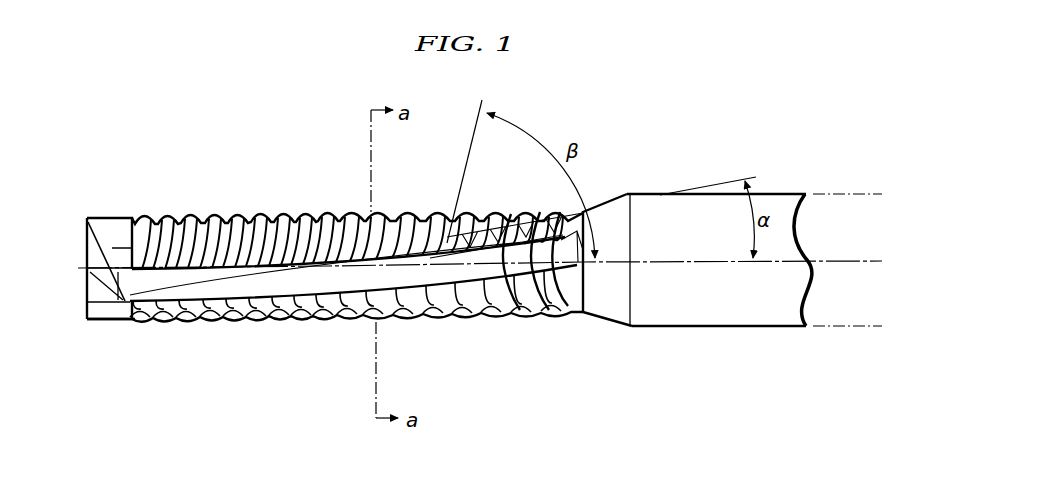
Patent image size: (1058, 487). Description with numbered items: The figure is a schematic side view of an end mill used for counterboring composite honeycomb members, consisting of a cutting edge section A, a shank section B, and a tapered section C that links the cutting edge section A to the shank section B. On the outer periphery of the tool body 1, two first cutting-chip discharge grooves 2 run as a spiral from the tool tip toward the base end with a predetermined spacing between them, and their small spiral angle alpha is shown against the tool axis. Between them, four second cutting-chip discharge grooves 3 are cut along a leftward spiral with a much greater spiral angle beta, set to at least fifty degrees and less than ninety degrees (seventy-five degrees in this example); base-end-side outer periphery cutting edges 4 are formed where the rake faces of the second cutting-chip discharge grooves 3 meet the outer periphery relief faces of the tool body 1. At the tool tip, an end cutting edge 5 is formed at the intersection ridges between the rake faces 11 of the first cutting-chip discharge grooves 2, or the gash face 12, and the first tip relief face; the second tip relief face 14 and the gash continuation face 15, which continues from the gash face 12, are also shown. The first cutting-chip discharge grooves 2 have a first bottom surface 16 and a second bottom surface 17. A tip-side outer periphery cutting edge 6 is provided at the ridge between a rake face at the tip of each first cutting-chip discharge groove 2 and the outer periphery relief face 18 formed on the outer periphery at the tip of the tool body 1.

The tool body 1 is at (772, 328).
The first cutting-chip discharge grooves 2 is at (418, 256).
The second cutting-chip discharge grooves 3 is at (141, 238).
The base-end-side outer periphery cutting edges 4 is at (145, 242).
The end cutting edge 5 is at (85, 295).
The tip-side outer periphery cutting edge 6 is at (103, 325).
The rake faces 11 is at (273, 320).
The gash face 12 is at (95, 320).
The second tip relief face 14 is at (88, 244).
The gash continuation face 15 is at (120, 291).
The first bottom surface 16 is at (342, 260).
The second bottom surface 17 is at (318, 288).
The outer periphery relief face 18 is at (98, 218).
The cutting edge section A is at (493, 198).
The shank section B is at (703, 329).
The tapered section C is at (608, 327).